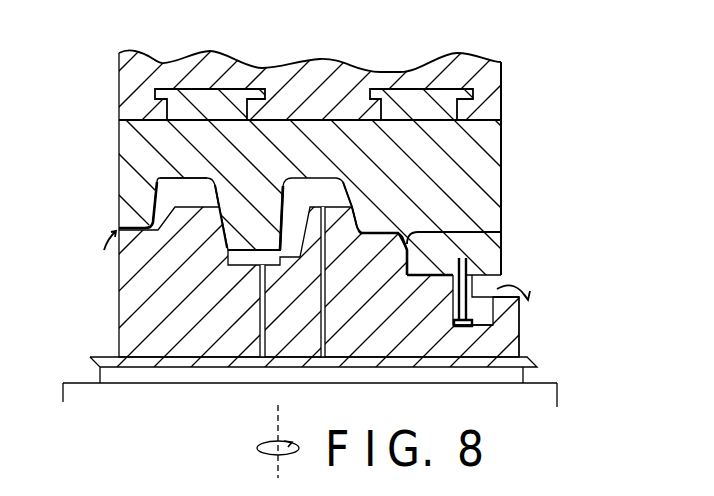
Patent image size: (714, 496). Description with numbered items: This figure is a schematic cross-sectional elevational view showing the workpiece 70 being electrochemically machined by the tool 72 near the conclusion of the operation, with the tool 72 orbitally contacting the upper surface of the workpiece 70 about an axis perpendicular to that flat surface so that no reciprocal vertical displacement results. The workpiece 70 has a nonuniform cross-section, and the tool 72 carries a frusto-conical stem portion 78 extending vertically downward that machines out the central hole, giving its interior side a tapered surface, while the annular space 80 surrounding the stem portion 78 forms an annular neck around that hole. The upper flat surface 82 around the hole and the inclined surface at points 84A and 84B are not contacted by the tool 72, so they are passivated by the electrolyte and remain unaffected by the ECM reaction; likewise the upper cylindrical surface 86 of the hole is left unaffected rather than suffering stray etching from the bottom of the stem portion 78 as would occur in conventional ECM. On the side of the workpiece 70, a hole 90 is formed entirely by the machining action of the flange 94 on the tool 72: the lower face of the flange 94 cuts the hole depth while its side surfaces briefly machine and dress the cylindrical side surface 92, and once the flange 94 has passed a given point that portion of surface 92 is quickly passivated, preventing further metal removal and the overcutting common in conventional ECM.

The workpiece 70 is at (155, 268).
The tool 72 is at (470, 196).
The frusto-conical stem portion 78 is at (258, 207).
The annular space 80 is at (188, 180).
The upper flat surface 82 is at (190, 203).
The point on inclined surface 84A is at (490, 232).
The point on inclined surface 84B is at (470, 262).
The upper cylindrical surface 86 is at (160, 308).
The hole 90 is at (493, 318).
The surface 92 is at (478, 300).
The flange 94 is at (482, 328).